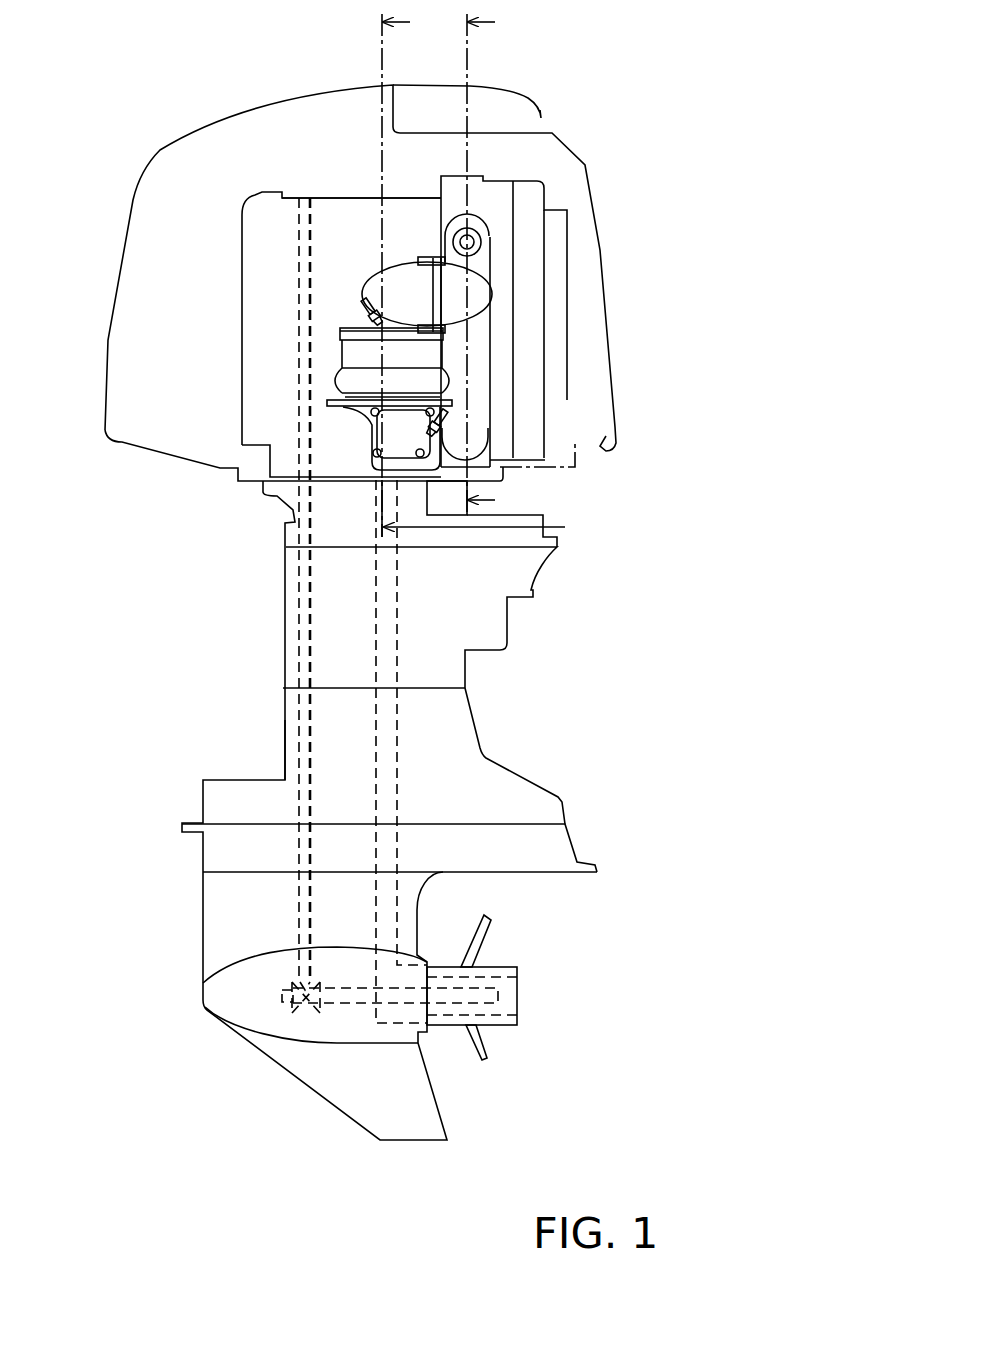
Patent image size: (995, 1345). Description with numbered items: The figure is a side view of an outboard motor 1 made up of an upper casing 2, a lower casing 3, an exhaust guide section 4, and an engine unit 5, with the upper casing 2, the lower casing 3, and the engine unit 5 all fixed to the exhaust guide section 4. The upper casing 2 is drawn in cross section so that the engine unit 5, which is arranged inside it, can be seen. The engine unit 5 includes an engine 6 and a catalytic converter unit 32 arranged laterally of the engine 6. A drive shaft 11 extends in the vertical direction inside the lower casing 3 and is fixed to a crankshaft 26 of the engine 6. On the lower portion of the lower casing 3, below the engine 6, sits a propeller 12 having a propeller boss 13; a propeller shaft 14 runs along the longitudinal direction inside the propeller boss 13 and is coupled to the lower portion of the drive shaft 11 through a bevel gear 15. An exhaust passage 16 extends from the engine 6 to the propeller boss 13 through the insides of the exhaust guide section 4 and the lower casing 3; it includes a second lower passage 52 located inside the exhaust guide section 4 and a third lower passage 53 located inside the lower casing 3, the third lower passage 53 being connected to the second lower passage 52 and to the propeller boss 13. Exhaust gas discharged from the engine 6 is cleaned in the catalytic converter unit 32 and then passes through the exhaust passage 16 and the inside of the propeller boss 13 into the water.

The outboard motor 1 is at (172, 89).
The upper casing 2 is at (167, 147).
The lower casing 3 is at (285, 710).
The exhaust guide section 4 is at (295, 520).
The engine unit 5 is at (226, 323).
The engine 6 is at (332, 202).
The drive shaft 11 is at (297, 757).
The propeller 12 is at (531, 998).
The propeller boss 13 is at (447, 1027).
The propeller shaft 14 is at (353, 1003).
The bevel gear 15 is at (290, 1000).
The exhaust passage 16 is at (412, 627).
The crankshaft 26 is at (297, 382).
The catalytic converter unit 32 is at (355, 289).
The second lower passage 52 is at (375, 525).
The third lower passage 53 is at (375, 665).